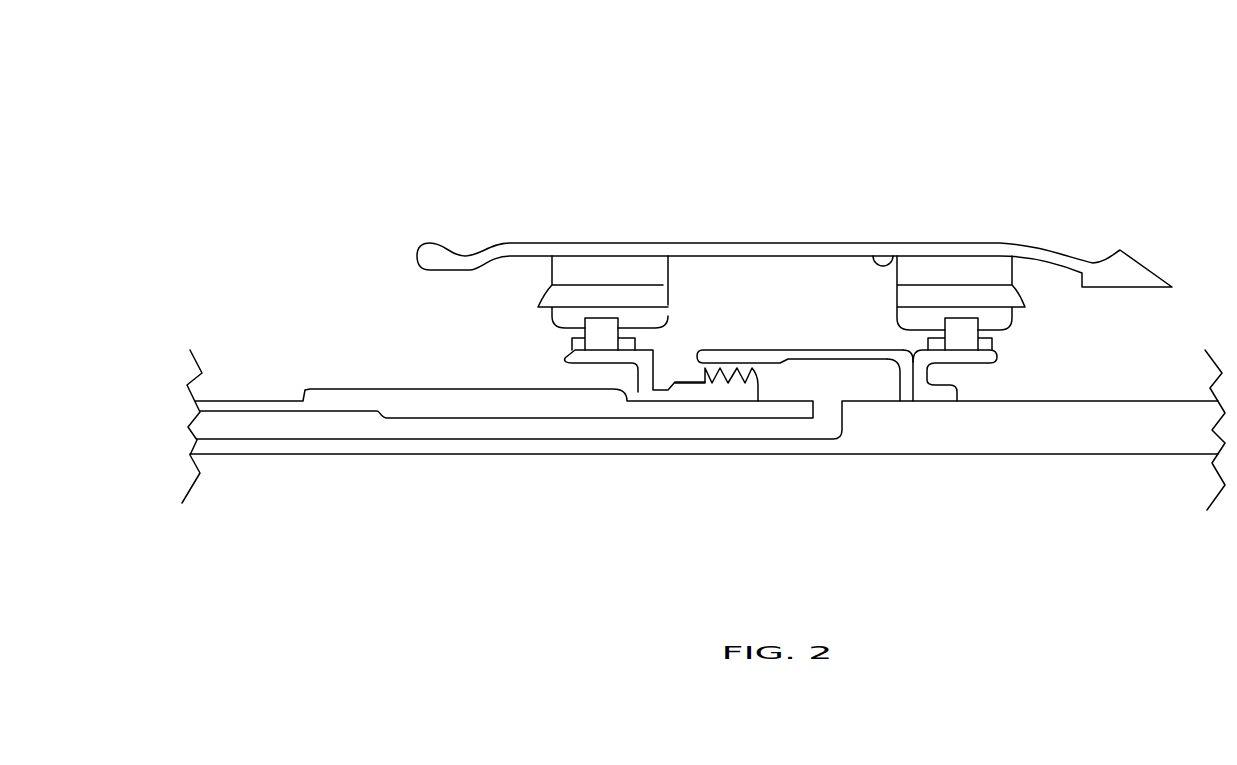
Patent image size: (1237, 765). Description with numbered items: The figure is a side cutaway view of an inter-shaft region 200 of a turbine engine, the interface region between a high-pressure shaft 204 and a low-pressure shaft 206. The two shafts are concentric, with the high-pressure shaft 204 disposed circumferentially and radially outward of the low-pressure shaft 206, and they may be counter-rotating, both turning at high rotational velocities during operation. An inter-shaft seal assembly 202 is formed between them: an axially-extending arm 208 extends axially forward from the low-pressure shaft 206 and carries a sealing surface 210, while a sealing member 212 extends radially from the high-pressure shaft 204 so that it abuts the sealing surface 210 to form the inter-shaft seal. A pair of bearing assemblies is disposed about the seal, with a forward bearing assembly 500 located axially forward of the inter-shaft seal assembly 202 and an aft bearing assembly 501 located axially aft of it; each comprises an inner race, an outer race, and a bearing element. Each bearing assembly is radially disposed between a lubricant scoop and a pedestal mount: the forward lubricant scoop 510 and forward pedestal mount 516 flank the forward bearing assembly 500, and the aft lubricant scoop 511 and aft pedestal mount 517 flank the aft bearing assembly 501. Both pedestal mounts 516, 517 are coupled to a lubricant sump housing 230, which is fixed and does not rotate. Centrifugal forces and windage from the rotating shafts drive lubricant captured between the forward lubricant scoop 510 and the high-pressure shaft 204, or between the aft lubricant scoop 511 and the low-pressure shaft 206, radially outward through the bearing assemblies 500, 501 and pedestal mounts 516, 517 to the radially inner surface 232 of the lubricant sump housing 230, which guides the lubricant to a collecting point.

The inter-shaft region 200 is at (425, 129).
The inter-shaft seal assembly 202 is at (774, 309).
The high-pressure shaft 204 is at (325, 398).
The low-pressure shaft 206 is at (1118, 442).
The axially-extending arm 208 is at (862, 349).
The sealing surface 210 is at (732, 363).
The sealing member 212 is at (687, 392).
The lubricant sump housing 230 is at (1058, 262).
The radially inner surface 232 is at (877, 253).
The forward bearing assembly 500 is at (537, 335).
The aft bearing assembly 501 is at (1025, 327).
The forward lubricant scoop 510 is at (643, 375).
The aft lubricant scoop 511 is at (927, 392).
The forward pedestal mount 516 is at (525, 281).
The aft pedestal mount 517 is at (1035, 292).